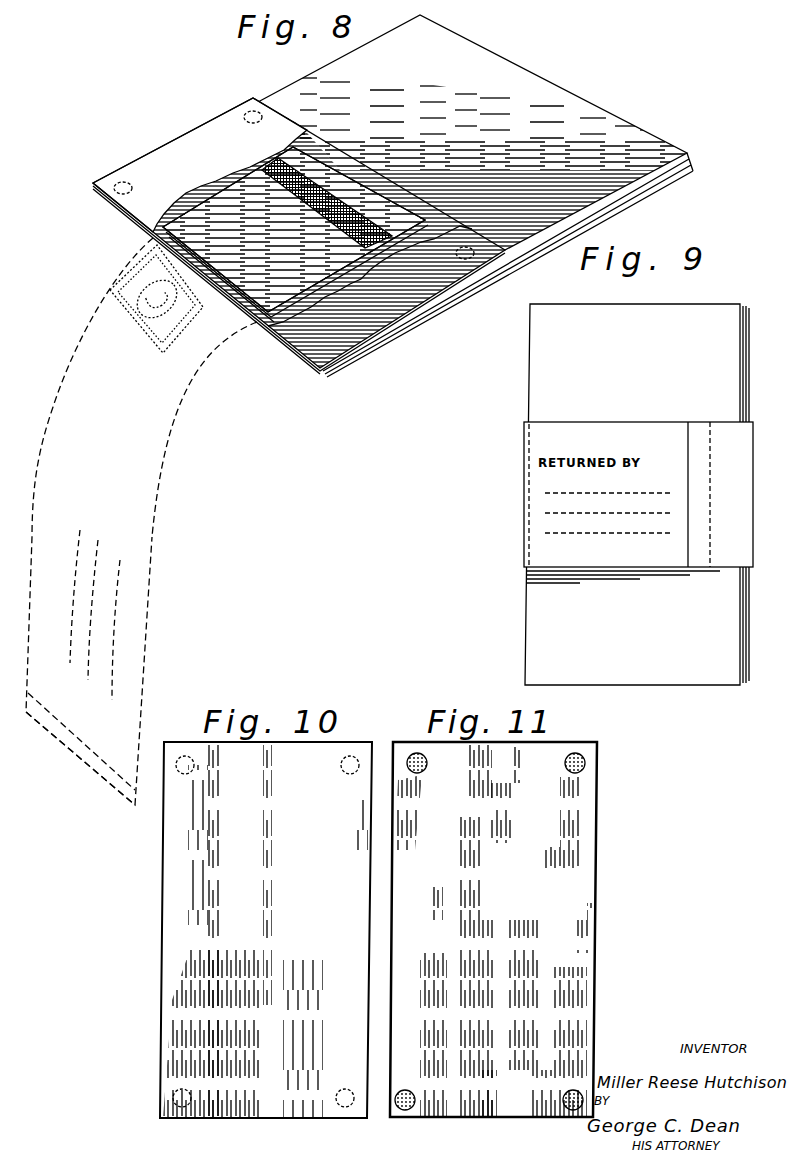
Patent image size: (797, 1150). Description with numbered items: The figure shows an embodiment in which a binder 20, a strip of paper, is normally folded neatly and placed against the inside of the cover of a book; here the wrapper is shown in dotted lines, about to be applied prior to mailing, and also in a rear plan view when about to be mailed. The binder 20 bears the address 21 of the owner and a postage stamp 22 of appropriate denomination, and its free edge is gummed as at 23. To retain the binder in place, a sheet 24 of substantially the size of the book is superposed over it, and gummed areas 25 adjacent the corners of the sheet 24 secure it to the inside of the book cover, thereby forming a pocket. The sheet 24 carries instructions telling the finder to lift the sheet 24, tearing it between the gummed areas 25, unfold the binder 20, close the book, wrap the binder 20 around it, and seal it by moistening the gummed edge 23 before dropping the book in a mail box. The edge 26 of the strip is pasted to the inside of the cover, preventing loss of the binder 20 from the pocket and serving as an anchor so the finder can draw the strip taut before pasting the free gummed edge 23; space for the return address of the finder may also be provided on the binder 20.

In FIG. 8, the binder 20 is at (143, 547).
In FIG. 8, the address 21 is at (173, 440).
In FIG. 8, the postage stamp 22 is at (127, 273).
In FIG. 8, the gummed edge 23 is at (90, 753).
In FIG. 8, the sheet 24 is at (224, 130).
In FIG. 10, the sheet 24 is at (325, 773).
In FIG. 11, the gummed areas 25 is at (586, 767).
In FIG. 8, the edge 26 is at (270, 325).